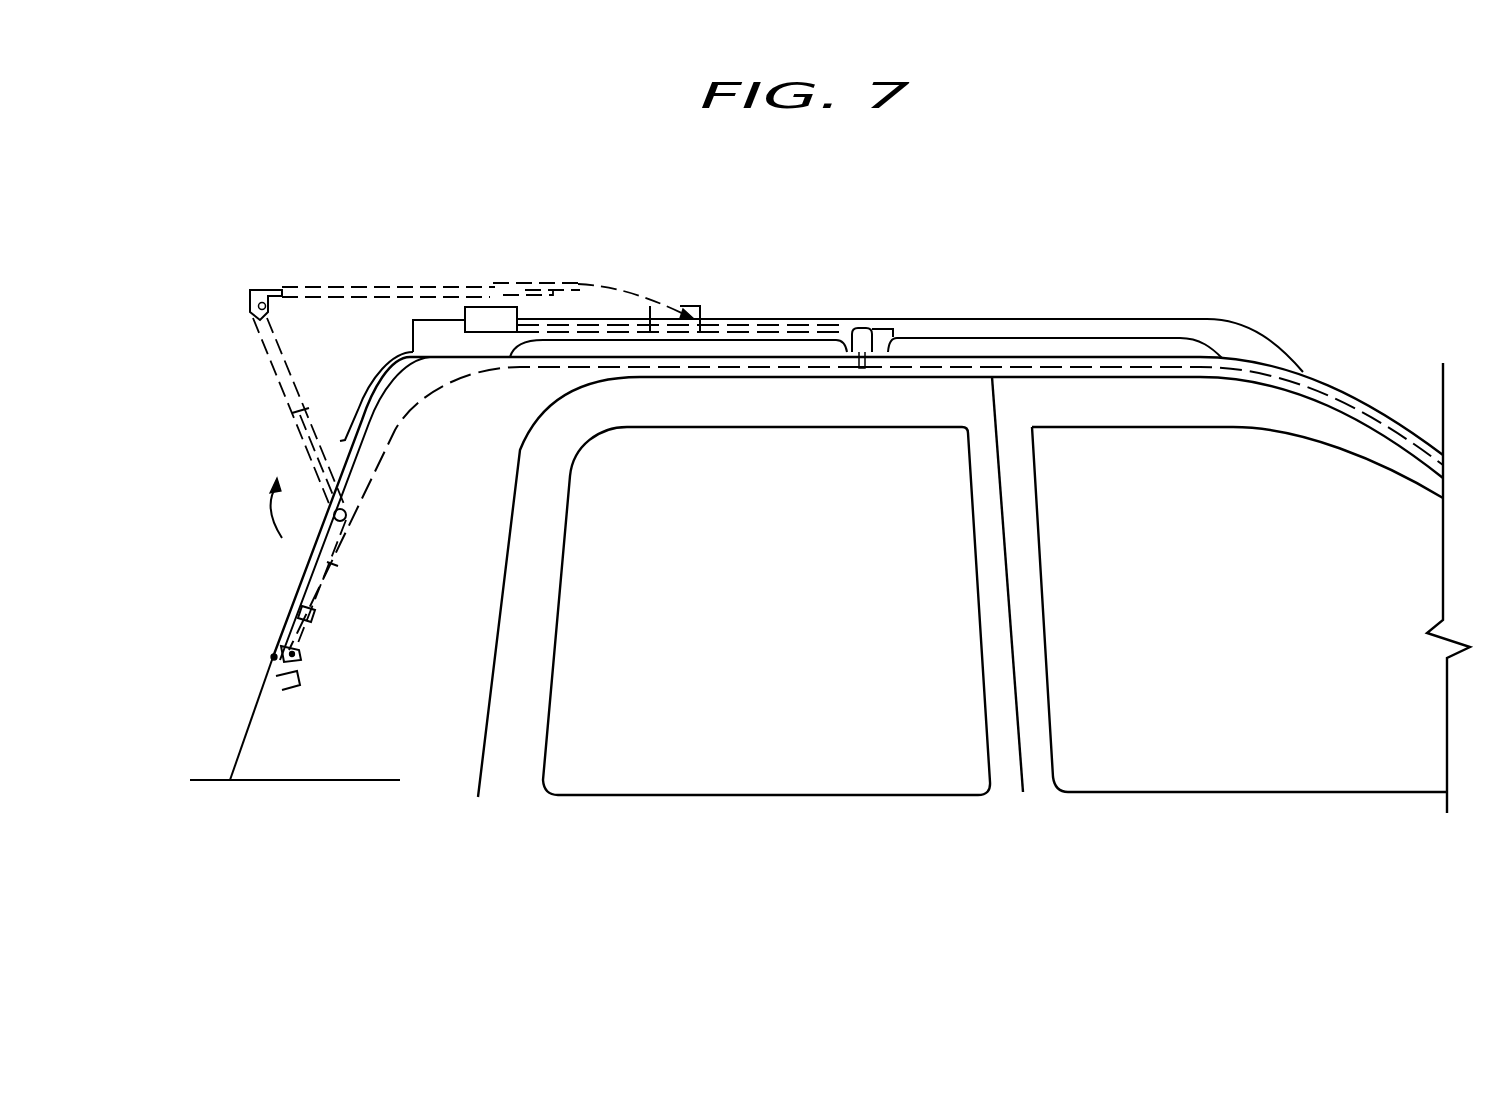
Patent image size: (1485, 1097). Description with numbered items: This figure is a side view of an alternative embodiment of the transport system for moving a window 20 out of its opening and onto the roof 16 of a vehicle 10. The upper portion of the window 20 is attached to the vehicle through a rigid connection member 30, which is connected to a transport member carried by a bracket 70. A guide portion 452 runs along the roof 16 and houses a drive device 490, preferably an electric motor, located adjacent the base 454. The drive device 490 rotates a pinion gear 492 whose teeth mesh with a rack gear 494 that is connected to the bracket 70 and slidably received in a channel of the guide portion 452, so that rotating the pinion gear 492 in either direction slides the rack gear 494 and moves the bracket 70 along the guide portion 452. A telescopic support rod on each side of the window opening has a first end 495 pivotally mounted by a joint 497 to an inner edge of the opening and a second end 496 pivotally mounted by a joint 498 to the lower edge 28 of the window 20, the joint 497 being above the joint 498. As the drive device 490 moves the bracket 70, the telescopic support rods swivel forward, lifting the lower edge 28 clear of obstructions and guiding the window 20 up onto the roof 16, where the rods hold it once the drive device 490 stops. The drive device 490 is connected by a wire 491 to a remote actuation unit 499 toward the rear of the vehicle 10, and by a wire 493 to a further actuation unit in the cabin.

The vehicle 10 is at (1346, 383).
The roof 16 is at (972, 355).
The window 20 is at (297, 588).
The lower edge 28 is at (273, 657).
The connection member 30 is at (377, 380).
The bracket 70 is at (490, 327).
The guide portion 452 is at (1165, 328).
The base 454 is at (843, 341).
The drive device 490 is at (861, 356).
The wire 491 is at (725, 370).
The pinion gear 492 is at (882, 340).
The wire 493 is at (1070, 370).
The rack gear 494 is at (770, 320).
The first end 495 is at (333, 565).
The second end 496 is at (313, 617).
The joint 497 is at (348, 517).
The joint 498 is at (300, 655).
The remote actuation unit 499 is at (300, 682).